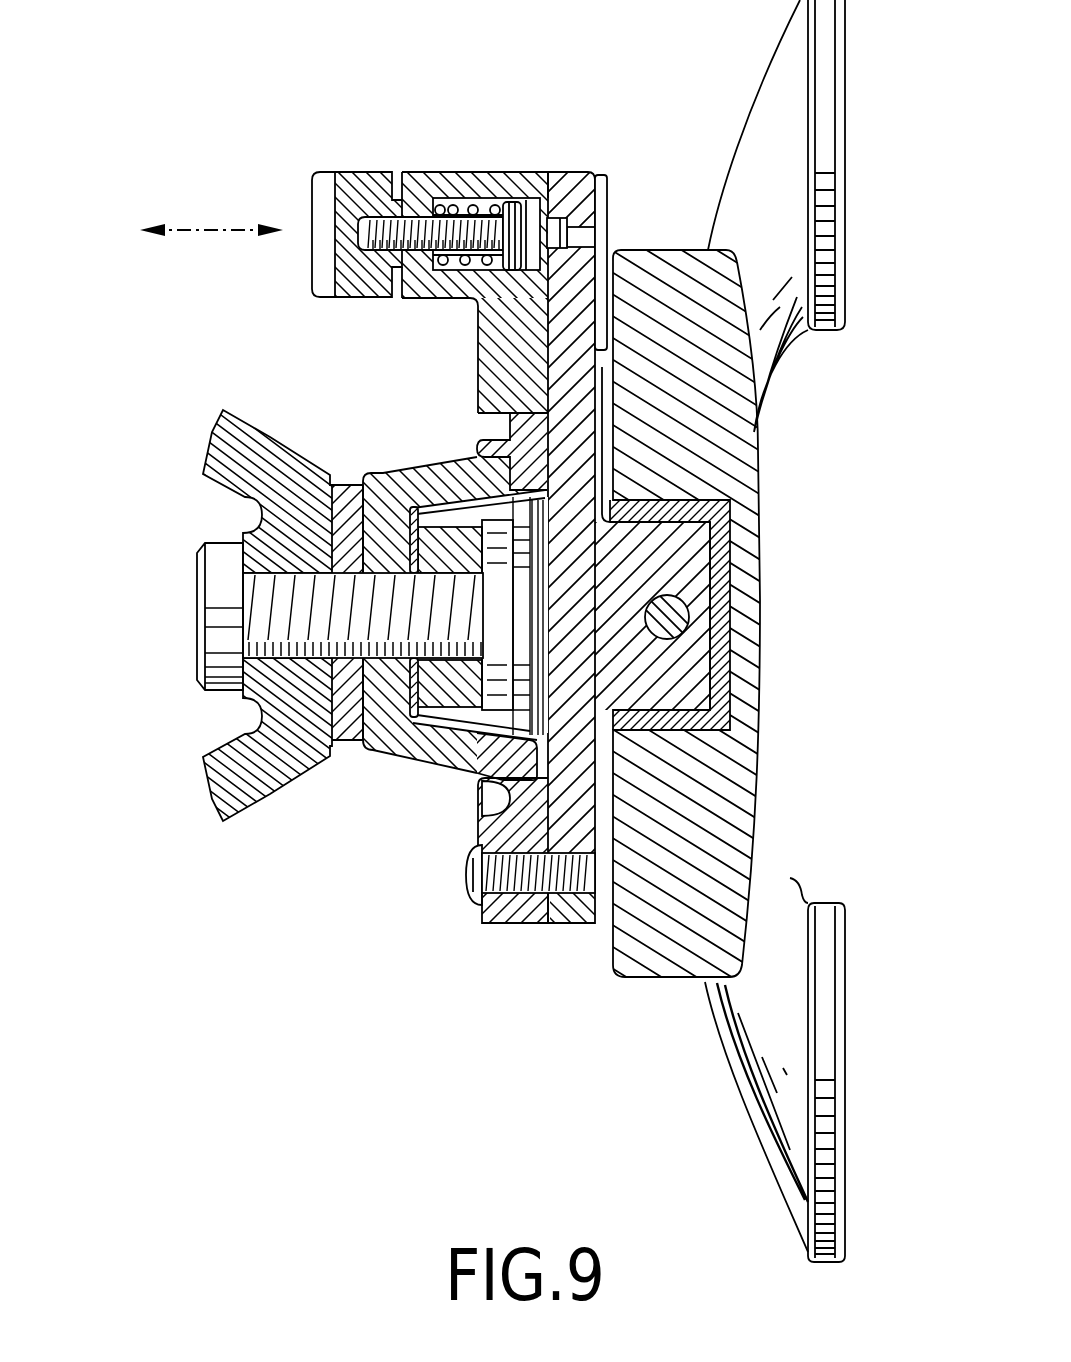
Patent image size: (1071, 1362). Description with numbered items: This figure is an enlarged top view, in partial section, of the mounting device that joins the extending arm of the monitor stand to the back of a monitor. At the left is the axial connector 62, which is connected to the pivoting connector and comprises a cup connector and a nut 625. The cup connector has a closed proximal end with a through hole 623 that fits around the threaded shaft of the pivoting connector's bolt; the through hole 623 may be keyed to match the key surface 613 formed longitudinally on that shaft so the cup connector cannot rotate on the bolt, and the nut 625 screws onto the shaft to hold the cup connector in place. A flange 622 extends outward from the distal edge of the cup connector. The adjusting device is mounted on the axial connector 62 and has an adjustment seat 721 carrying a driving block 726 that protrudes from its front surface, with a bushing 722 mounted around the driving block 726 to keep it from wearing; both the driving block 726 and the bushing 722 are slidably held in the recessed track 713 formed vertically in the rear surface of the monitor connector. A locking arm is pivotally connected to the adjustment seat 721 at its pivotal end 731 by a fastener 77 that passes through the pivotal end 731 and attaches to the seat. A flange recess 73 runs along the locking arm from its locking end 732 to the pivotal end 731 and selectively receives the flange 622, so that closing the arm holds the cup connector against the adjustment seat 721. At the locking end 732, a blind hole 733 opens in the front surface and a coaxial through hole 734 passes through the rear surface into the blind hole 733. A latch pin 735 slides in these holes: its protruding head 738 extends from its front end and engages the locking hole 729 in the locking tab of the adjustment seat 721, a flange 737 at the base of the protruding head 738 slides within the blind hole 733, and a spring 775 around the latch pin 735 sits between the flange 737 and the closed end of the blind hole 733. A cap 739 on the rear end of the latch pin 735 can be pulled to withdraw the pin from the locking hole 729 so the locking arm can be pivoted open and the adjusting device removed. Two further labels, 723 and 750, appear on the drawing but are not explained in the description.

The axial connector 62 is at (352, 780).
The key surface 613 is at (192, 642).
The through hole 623 is at (387, 574).
The nut 625 is at (442, 525).
The flange 622 is at (520, 415).
The flange recess 73 is at (480, 797).
The fastener 77 is at (463, 883).
The pivotal end 731 is at (497, 918).
The recessed track 713 is at (705, 712).
The adjustment seat 721 is at (732, 559).
The bushing 722 is at (762, 511).
The wheel body 723 is at (590, 413).
The driving block 726 is at (693, 680).
The locking hole 729 is at (588, 237).
The locking end 732 is at (536, 200).
The blind hole 733 is at (592, 175).
The through hole 734 is at (415, 218).
The latch pin 735 is at (452, 208).
The flange 737 is at (513, 273).
The protruding head 738 is at (585, 202).
The cap 739 is at (342, 192).
The pin hole 750 is at (675, 610).
The spring 775 is at (440, 203).